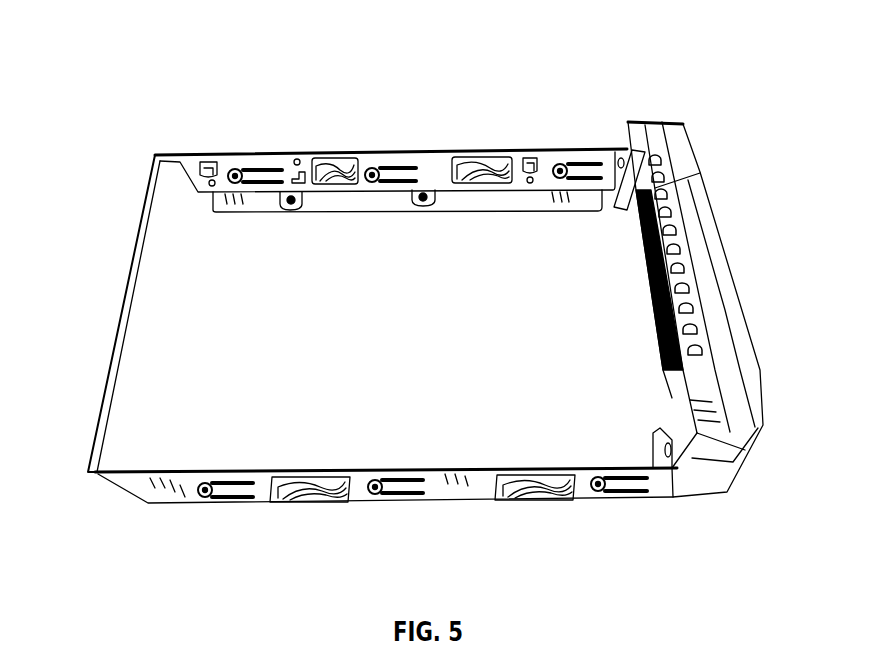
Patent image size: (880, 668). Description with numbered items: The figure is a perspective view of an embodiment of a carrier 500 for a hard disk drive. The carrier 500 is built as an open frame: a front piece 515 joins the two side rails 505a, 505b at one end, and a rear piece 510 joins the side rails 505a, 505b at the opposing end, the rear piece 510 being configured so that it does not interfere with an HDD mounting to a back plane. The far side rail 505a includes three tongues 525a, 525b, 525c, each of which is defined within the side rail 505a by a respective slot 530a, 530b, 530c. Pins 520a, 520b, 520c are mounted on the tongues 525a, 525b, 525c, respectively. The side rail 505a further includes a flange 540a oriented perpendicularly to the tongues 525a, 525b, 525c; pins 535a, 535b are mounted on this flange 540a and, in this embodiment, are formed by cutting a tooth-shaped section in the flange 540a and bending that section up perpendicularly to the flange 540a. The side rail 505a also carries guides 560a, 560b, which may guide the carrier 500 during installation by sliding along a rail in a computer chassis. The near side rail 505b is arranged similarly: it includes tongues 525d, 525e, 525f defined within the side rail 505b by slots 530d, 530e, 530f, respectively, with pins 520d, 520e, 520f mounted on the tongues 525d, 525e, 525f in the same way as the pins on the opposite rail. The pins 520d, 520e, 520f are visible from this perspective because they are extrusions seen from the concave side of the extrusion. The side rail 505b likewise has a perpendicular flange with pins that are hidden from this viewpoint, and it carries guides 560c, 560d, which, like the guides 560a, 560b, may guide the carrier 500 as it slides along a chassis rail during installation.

The carrier 500 is at (198, 46).
The side rail 505a is at (180, 183).
The side rail 505b is at (142, 462).
The rear piece 510 is at (133, 263).
The front piece 515 is at (707, 377).
The pin 520a is at (558, 166).
The pin 520b is at (370, 170).
The pin 520c is at (230, 170).
The pin 520d is at (597, 492).
The pin 520e is at (374, 496).
The pin 520f is at (203, 496).
The tongue 525a is at (595, 165).
The tongue 525b is at (410, 167).
The tongue 525c is at (278, 167).
The tongue 525d is at (625, 481).
The tongue 525e is at (400, 487).
The tongue 525f is at (233, 487).
The slot 530a is at (598, 178).
The slot 530b is at (400, 181).
The slot 530c is at (265, 181).
The slot 530d is at (642, 493).
The slot 530e is at (418, 495).
The slot 530f is at (248, 499).
The pin 535a is at (432, 196).
The pin 535b is at (300, 196).
The flange 540a is at (205, 162).
The guide 560a is at (457, 158).
The guide 560b is at (313, 158).
The guide 560c is at (513, 501).
The guide 560d is at (300, 502).